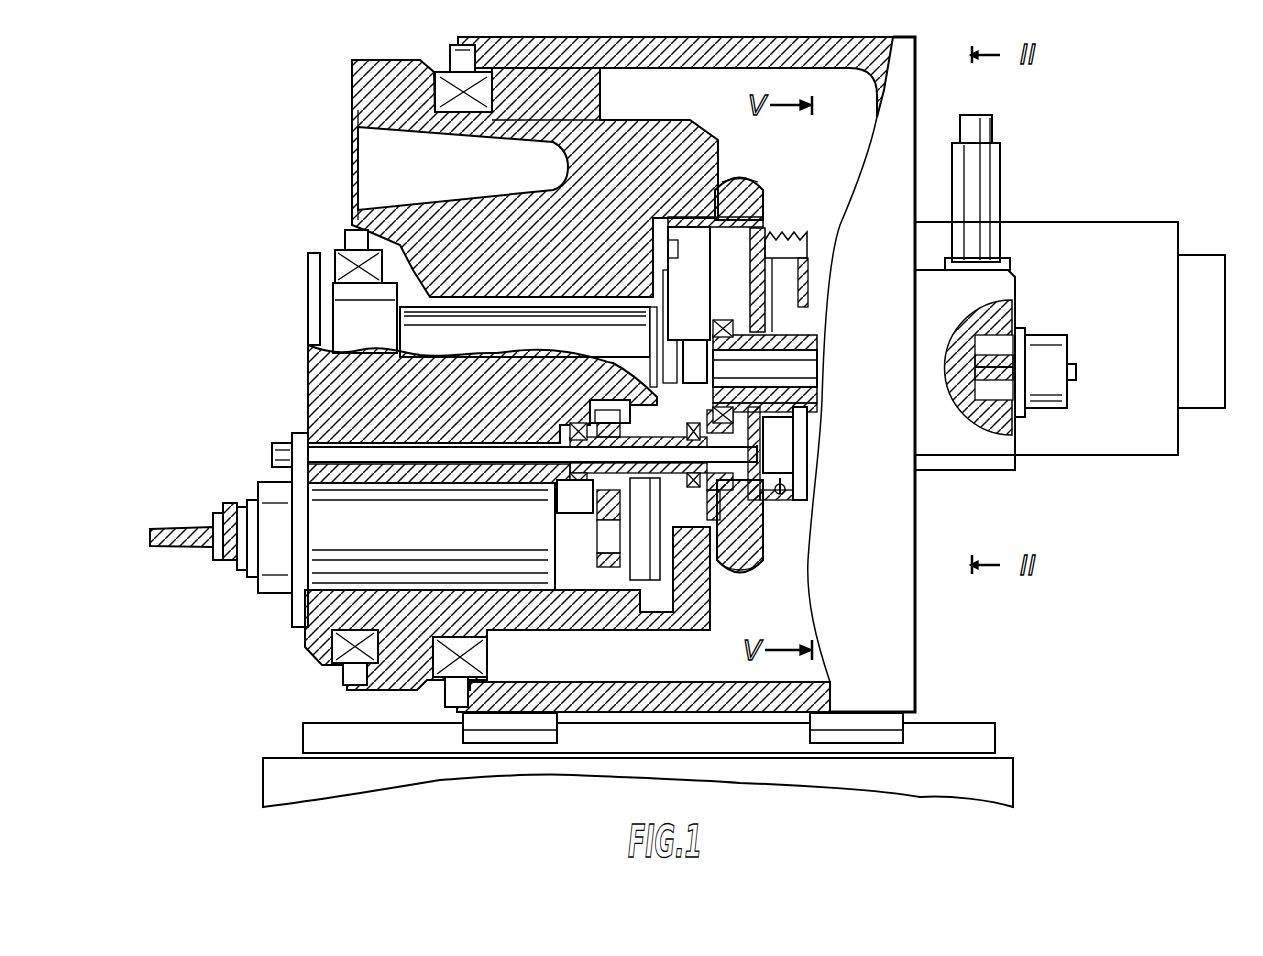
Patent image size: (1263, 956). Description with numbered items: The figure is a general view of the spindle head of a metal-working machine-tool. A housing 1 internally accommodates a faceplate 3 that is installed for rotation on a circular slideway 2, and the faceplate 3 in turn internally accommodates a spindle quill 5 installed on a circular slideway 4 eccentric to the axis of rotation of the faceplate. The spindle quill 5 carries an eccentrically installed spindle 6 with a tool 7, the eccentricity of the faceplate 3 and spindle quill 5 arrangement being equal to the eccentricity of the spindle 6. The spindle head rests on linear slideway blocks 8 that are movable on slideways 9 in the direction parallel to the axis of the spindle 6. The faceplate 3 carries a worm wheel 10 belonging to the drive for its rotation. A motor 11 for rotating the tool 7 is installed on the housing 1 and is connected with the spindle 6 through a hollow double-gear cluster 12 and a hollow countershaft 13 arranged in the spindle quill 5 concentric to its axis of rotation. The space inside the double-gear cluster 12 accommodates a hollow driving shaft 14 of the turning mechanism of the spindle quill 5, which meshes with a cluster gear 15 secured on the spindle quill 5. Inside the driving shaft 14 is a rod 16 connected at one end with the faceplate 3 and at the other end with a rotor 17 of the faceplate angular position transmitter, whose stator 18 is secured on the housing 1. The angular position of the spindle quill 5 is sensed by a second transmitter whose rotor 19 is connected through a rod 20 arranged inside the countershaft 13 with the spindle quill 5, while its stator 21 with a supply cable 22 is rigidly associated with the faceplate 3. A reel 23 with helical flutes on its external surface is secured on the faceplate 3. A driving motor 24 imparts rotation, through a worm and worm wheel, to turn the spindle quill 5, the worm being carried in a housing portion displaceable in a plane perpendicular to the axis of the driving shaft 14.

The housing 1 is at (925, 96).
The circular slideway 2 is at (458, 63).
The faceplate 3 is at (372, 83).
The circular slideway 4 is at (340, 665).
The spindle quill 5 is at (318, 360).
The spindle 6 is at (273, 493).
The tool 7 is at (190, 538).
The linear slideway blocks 8 is at (858, 730).
The slideways 9 is at (940, 738).
The worm wheel 10 is at (752, 553).
The motor 11 is at (1078, 232).
The hollow double-gear cluster 12 is at (813, 403).
The hollow countershaft 13 is at (580, 410).
The hollow driving shaft 14 is at (803, 373).
The cluster gear 15 is at (668, 405).
The rod 16 is at (767, 337).
The rotor 17 is at (1072, 365).
The stator 18 is at (1047, 350).
The rotor 19 is at (800, 452).
The rod 20 is at (347, 457).
The stator 21 is at (782, 428).
The supply cable 22 is at (785, 483).
The reel 23 is at (783, 240).
The driving motor 24 is at (985, 175).